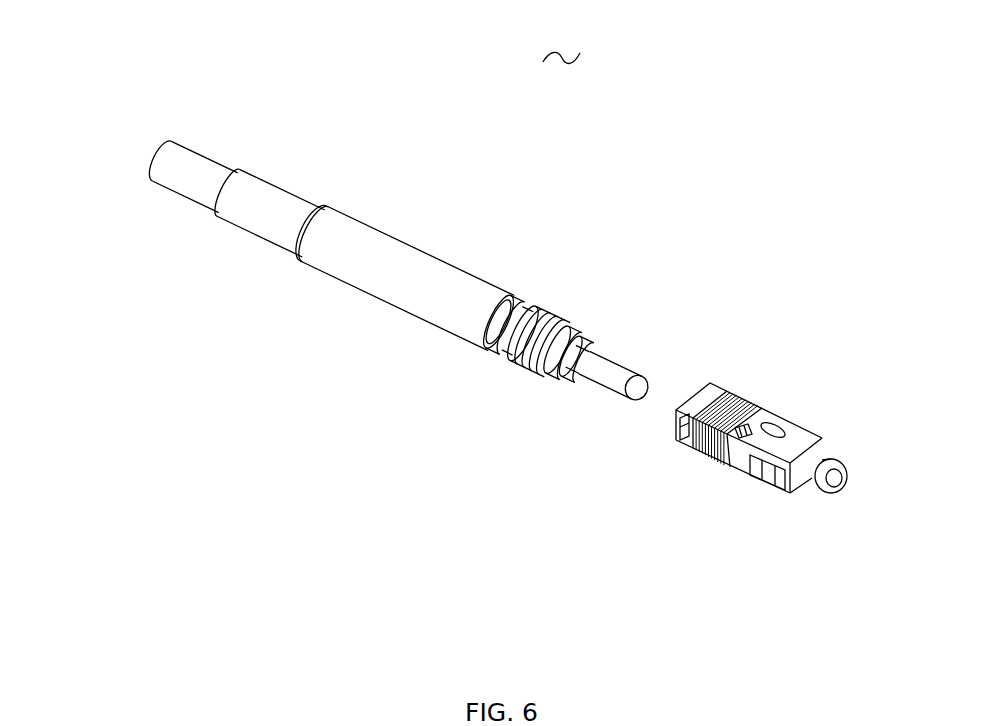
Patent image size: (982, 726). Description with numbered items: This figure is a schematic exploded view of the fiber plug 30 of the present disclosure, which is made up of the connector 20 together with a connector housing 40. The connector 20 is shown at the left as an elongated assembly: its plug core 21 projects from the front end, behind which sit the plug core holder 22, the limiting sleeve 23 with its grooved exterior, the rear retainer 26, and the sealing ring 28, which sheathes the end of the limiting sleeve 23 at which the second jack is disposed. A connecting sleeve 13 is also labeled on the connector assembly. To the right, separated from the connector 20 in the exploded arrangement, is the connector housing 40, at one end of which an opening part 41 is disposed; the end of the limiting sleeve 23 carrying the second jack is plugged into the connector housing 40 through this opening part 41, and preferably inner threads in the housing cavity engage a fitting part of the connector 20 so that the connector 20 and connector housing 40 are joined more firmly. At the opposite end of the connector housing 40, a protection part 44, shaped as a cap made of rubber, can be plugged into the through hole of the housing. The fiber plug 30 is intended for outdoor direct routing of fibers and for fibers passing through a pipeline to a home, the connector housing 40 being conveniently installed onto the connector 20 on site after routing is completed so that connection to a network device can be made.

The connecting sleeve 13 is at (568, 326).
The connector 20 is at (496, 252).
The plug core 21 is at (590, 381).
The plug core holder 22 is at (423, 287).
The limiting sleeve 23 is at (517, 367).
The rear retainer 26 is at (542, 380).
The sealing ring 28 is at (488, 338).
The fiber plug 30 is at (566, 43).
The connector housing 40 is at (763, 408).
The opening part 41 is at (677, 403).
The protection part 44 is at (814, 482).